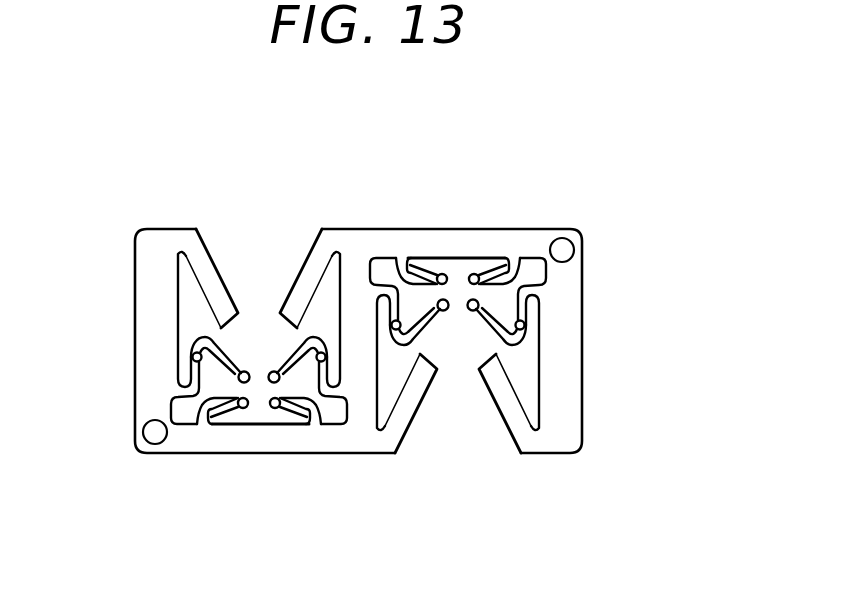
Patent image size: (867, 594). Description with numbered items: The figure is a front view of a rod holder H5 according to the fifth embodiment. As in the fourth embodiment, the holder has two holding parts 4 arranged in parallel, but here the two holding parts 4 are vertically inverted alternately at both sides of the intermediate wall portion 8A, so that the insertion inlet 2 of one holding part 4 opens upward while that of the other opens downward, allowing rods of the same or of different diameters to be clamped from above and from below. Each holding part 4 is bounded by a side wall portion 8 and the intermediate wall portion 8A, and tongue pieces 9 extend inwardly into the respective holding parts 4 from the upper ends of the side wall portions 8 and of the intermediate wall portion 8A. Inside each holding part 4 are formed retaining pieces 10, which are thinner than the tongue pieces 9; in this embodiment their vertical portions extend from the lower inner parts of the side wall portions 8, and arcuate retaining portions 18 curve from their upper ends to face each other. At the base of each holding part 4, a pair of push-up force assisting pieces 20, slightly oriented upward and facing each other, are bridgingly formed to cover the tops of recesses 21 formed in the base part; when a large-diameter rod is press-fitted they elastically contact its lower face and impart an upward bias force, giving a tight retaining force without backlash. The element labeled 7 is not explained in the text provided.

The rod holder H5 is at (610, 192).
The insertion inlet 2 is at (259, 296).
The holding part 4 is at (283, 338).
The bar 7 is at (235, 443).
The side wall portion 8 is at (155, 337).
The intermediate wall portion 8A is at (358, 277).
The tongue piece 9 is at (223, 295).
The retaining piece 10 is at (177, 380).
The arcuate retaining portion 18 is at (227, 366).
The push-up force assisting piece 20 is at (220, 418).
The recess 21 is at (252, 422).